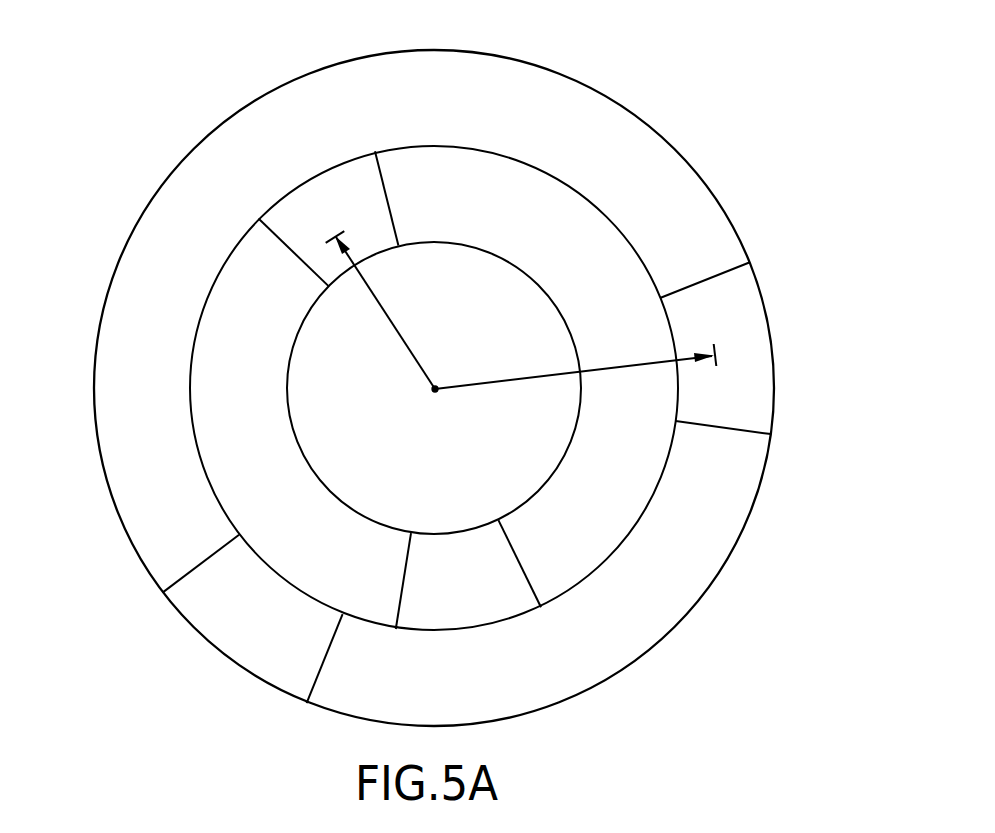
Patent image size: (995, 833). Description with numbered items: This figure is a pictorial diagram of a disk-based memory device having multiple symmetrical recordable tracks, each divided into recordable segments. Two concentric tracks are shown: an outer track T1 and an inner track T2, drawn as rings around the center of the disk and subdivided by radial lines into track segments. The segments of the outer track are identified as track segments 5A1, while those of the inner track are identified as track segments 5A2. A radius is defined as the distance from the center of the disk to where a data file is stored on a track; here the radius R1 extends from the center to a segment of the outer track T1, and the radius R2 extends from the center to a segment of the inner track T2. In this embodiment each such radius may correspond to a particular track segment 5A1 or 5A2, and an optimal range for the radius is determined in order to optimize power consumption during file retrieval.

The track segment 5A1 is at (738, 303).
The track segment 5A2 is at (352, 180).
The track T1 is at (675, 185).
The track T2 is at (625, 495).
The radius R1 is at (648, 363).
The radius R2 is at (382, 310).